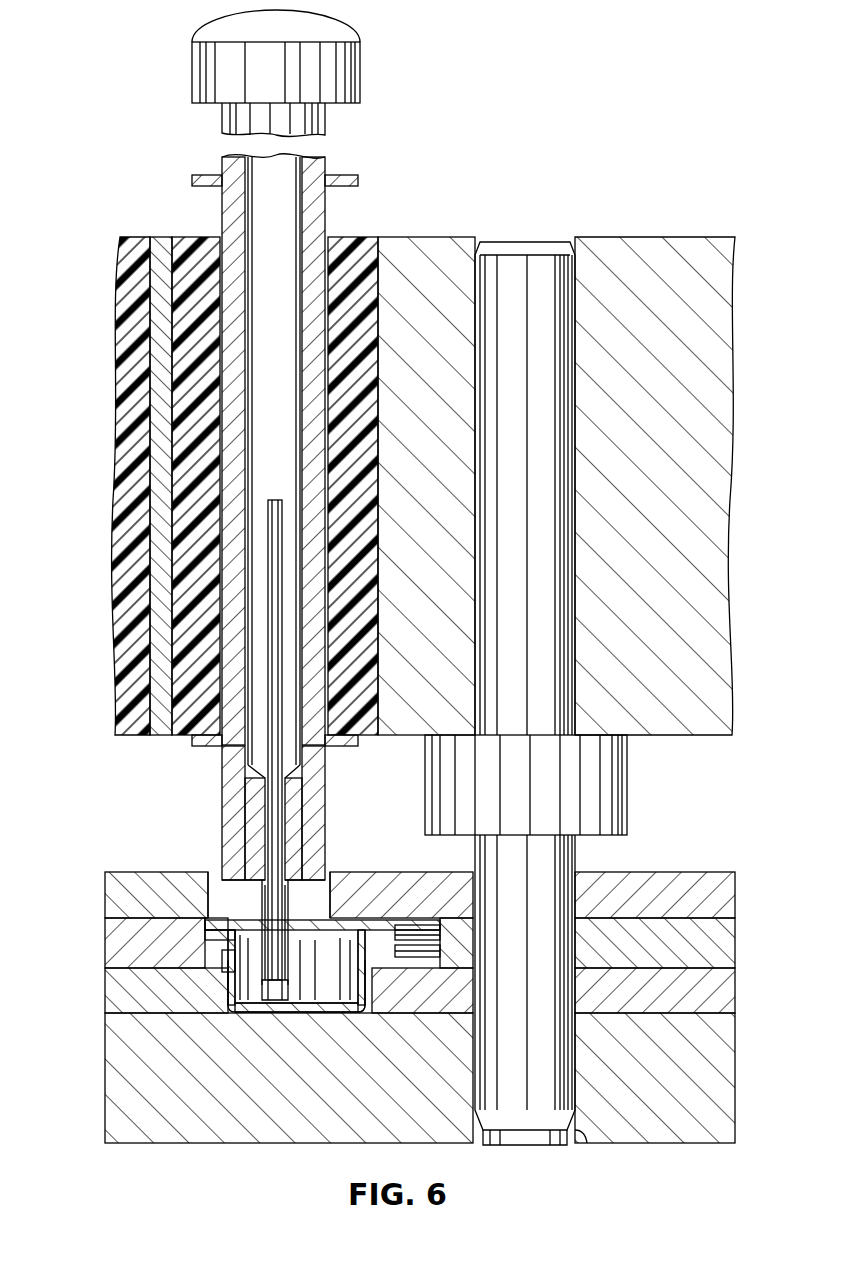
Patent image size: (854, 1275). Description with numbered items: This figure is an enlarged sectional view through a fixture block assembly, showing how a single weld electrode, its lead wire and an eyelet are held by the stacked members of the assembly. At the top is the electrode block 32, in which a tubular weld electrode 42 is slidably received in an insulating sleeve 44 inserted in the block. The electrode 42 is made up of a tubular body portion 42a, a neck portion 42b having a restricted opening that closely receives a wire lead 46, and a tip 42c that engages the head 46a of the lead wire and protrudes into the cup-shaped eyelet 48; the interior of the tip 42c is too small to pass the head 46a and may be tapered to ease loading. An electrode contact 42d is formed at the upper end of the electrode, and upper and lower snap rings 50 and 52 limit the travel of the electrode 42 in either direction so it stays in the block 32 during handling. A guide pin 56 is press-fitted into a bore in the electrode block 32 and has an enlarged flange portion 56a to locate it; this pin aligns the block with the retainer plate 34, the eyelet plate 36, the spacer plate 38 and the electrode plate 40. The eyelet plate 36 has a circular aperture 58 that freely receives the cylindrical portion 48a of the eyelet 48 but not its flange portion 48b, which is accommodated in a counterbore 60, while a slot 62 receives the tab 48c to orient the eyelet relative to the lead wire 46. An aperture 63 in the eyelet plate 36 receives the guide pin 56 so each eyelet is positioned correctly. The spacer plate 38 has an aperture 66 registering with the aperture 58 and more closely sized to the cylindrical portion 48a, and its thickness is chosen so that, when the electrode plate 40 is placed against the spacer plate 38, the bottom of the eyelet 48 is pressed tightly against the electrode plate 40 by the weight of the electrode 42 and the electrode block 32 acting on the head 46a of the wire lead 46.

The electrode block 32 is at (640, 523).
The retainer plate 34 is at (112, 890).
The eyelet plate 36 is at (108, 940).
The spacer plate 38 is at (108, 990).
The electrode plate 40 is at (110, 1060).
The tubular weld electrode 42 is at (312, 205).
The tubular body portion 42a is at (322, 440).
The neck portion 42b is at (315, 810).
The tip 42c is at (288, 958).
The electrode contact 42d is at (355, 66).
The insulating sleeve 44 is at (118, 312).
The wire lead 46 is at (277, 572).
The head 46a is at (275, 1005).
The cup-shaped eyelet 48 is at (340, 1012).
The cylindrical portion 48a is at (228, 995).
The flange portion 48b is at (205, 938).
The tab 48c is at (410, 925).
The upper snap ring 50 is at (345, 182).
The lower snap ring 52 is at (338, 748).
The guide pin 56 is at (565, 632).
The enlarged flange portion 56a is at (612, 782).
The circular aperture 58 is at (225, 965).
The counterbore 60 is at (205, 925).
The slot 62 is at (420, 957).
The aperture 63 is at (580, 1140).
The aperture 66 is at (370, 1010).